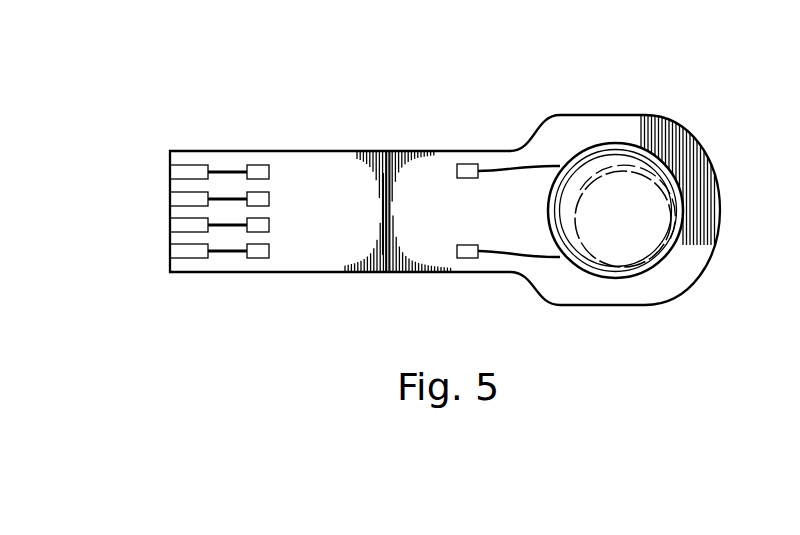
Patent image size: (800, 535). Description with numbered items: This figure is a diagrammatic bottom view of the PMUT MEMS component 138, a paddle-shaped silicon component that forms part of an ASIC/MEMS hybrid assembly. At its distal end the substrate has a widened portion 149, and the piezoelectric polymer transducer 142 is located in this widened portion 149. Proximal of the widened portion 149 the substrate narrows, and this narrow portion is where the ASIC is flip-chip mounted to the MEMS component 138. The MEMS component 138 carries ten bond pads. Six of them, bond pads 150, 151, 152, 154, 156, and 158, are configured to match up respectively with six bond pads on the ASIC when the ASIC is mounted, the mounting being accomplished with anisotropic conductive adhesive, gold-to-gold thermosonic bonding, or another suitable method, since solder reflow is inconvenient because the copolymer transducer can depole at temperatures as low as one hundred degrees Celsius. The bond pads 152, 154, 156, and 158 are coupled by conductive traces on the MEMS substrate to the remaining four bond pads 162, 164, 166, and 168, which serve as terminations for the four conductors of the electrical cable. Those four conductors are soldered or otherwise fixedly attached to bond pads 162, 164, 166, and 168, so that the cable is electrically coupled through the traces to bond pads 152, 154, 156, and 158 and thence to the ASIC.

The PMUT MEMS component 138 is at (331, 90).
The piezoelectric polymer transducer 142 is at (650, 250).
The widened portion 149 is at (700, 150).
The bond pad 150 is at (467, 163).
The bond pad 151 is at (467, 260).
The bond pad 152 is at (258, 162).
The bond pad 154 is at (272, 197).
The bond pad 156 is at (272, 226).
The bond pad 158 is at (258, 260).
The bond pad 162 is at (181, 171).
The bond pad 164 is at (181, 198).
The bond pad 166 is at (181, 226).
The bond pad 168 is at (181, 252).